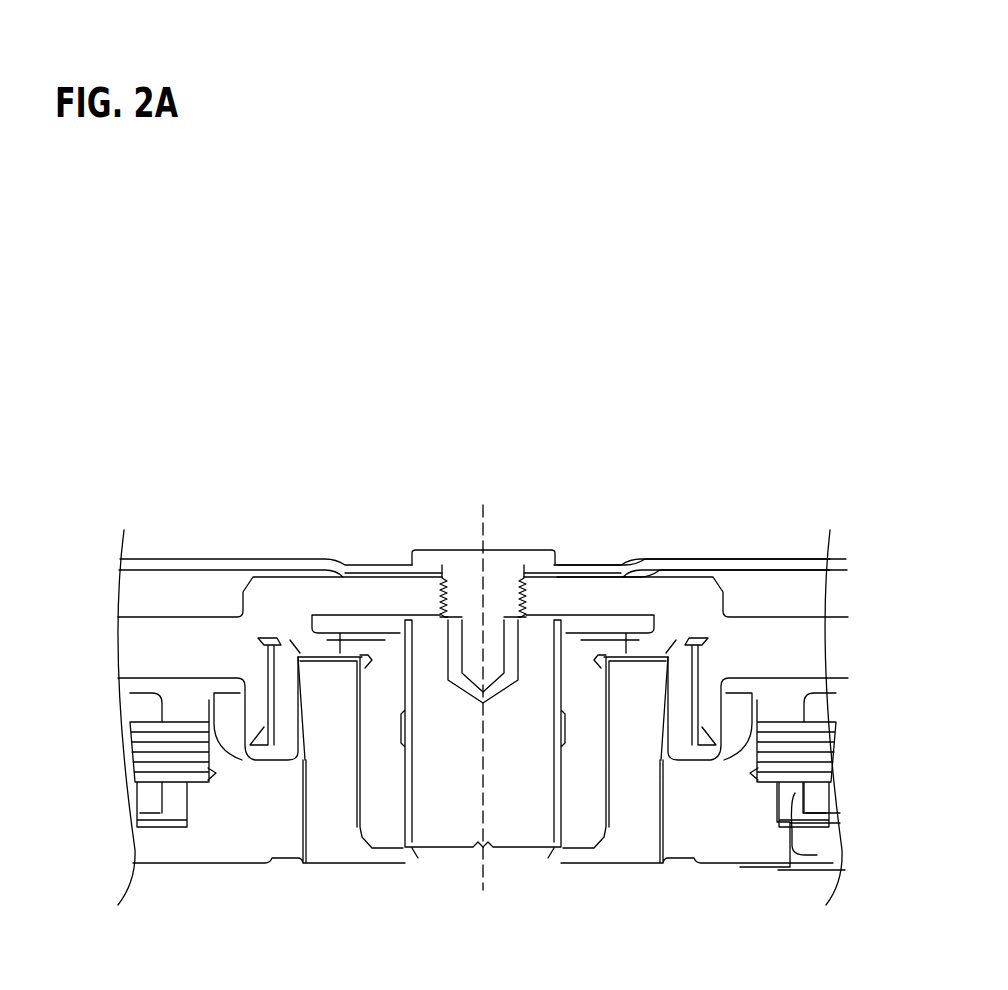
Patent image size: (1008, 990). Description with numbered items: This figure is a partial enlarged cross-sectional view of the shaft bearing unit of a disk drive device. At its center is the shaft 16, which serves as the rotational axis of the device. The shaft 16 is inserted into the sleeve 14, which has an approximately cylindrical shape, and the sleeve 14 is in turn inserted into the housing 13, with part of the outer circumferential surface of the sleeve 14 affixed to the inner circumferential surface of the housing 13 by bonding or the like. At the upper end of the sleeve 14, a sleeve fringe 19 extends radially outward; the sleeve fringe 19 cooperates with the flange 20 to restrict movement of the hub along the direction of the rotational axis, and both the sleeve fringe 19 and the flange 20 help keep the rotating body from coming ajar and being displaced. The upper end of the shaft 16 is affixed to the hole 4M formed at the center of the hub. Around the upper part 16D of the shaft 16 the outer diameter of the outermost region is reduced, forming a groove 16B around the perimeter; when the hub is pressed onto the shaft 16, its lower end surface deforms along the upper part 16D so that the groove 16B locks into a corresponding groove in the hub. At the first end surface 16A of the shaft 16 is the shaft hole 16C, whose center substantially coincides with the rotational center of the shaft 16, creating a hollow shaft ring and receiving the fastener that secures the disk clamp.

The hole 4M is at (410, 548).
The housing 13 is at (323, 838).
The sleeve 14 is at (408, 862).
The shaft 16 is at (517, 823).
The first end surface 16A is at (510, 595).
The groove 16B is at (408, 603).
The shaft hole 16C is at (478, 598).
The upper part 16D is at (560, 595).
The sleeve fringe 19 is at (622, 613).
The flange 20 is at (280, 663).